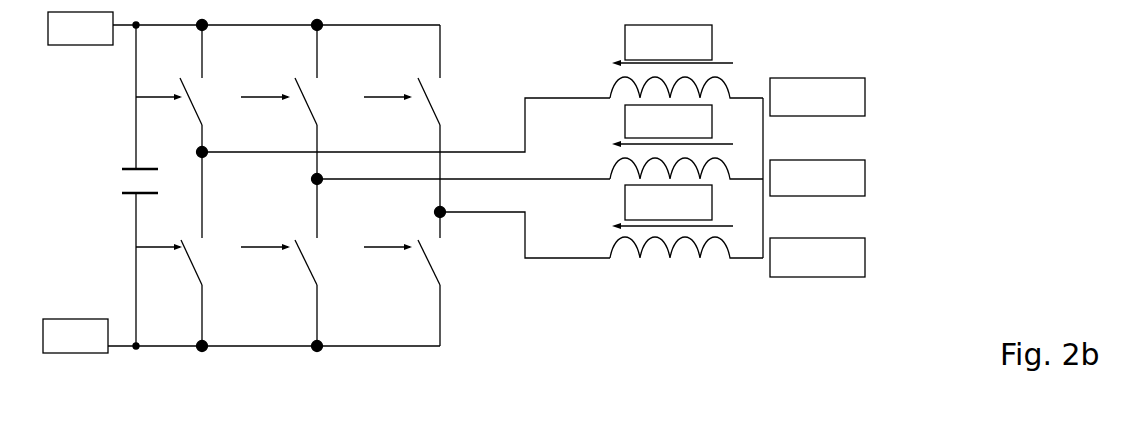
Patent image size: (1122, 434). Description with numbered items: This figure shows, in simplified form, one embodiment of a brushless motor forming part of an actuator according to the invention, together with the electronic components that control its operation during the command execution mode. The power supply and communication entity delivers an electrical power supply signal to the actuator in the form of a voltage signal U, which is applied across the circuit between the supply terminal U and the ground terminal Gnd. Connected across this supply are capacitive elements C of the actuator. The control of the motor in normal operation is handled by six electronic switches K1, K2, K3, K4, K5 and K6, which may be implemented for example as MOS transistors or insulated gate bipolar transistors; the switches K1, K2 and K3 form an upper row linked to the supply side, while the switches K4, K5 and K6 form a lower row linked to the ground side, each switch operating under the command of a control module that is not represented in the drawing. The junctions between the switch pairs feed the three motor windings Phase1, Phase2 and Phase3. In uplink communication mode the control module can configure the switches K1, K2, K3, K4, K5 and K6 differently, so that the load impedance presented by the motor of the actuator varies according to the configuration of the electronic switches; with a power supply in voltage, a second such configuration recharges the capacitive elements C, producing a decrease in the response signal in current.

The voltage signal U is at (80, 28).
The ground Gnd is at (75, 336).
The capacitive elements C is at (122, 181).
The electronic switch K1 is at (156, 131).
The electronic switch K2 is at (266, 131).
The electronic switch K3 is at (389, 131).
The electronic switch K4 is at (156, 288).
The electronic switch K5 is at (266, 288).
The electronic switch K6 is at (389, 288).
The motor phase winding 1 Phase1 is at (737, 96).
The motor phase winding 2 Phase2 is at (737, 177).
The motor phase winding 3 Phase3 is at (737, 257).